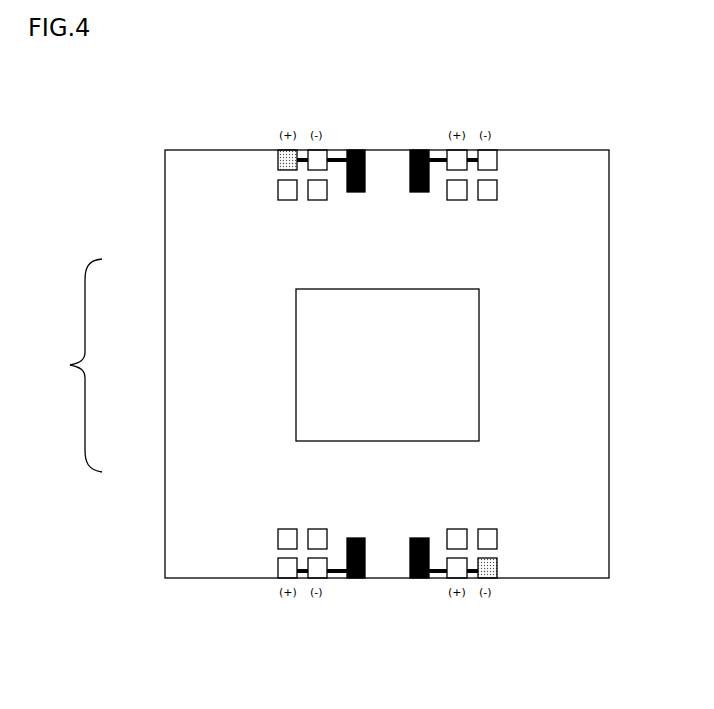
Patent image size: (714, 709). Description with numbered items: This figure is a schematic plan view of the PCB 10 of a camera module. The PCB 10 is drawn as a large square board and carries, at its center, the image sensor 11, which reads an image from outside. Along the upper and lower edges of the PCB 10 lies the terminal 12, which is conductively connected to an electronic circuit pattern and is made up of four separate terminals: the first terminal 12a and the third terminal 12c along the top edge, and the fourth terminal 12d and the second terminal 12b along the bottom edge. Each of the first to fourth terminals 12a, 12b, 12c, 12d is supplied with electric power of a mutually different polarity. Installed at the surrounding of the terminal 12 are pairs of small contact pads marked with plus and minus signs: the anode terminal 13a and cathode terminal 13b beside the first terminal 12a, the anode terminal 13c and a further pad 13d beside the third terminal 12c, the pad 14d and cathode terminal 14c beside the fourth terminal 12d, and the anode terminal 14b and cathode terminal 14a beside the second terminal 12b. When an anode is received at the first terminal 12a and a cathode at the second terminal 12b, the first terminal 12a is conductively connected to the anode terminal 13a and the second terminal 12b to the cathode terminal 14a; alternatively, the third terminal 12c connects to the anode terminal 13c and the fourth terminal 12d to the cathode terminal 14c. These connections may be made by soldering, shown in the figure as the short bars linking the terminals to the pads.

The PCB 10 is at (583, 308).
The image sensor 11 is at (462, 363).
The terminal 12 is at (72, 365).
The first terminal 12a is at (347, 191).
The second terminal 12b is at (410, 538).
The third terminal 12c is at (410, 191).
The fourth terminal 12d is at (347, 538).
The anode terminal 13a is at (280, 152).
The cathode terminal 13b is at (322, 158).
The anode terminal 13c is at (452, 157).
The terminal pad (-) 13d is at (487, 157).
The cathode terminal 14a is at (497, 572).
The anode terminal 14b is at (452, 572).
The cathode terminal 14c is at (318, 572).
The terminal pad (+) 14d is at (278, 572).